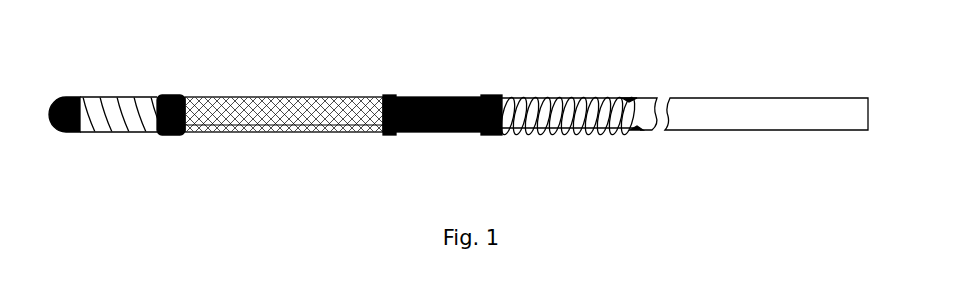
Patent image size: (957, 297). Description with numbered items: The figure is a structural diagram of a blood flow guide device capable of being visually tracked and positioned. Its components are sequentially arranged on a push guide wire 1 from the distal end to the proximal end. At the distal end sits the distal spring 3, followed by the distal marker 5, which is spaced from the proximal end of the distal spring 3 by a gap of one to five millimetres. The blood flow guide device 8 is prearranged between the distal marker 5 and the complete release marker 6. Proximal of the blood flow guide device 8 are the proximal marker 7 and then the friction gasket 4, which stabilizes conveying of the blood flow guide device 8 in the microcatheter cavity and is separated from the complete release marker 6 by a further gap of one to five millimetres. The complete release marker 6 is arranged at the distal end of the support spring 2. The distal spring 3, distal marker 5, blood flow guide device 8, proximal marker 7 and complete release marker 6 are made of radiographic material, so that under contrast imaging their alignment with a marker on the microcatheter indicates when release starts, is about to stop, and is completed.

The push guide wire 1 is at (770, 98).
The support spring 2 is at (553, 97).
The distal spring 3 is at (108, 97).
The friction gasket 4 is at (408, 96).
The distal marker 5 is at (171, 95).
The complete release marker 6 is at (493, 94).
The proximal marker 7 is at (386, 94).
The blood flow guide device 8 is at (276, 96).